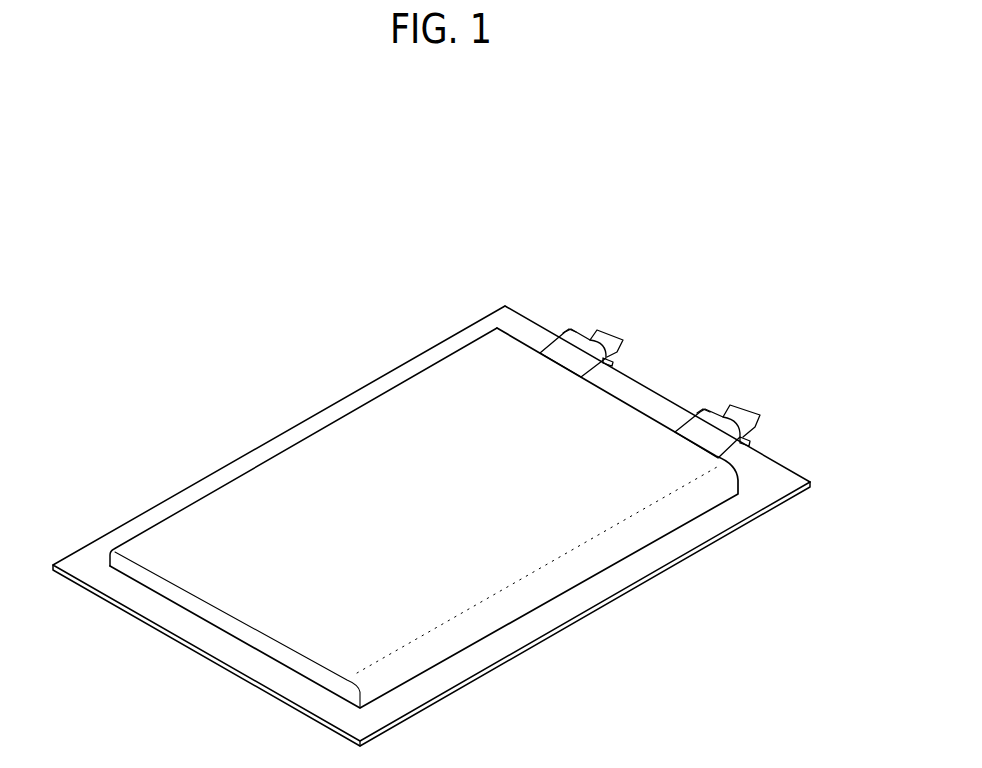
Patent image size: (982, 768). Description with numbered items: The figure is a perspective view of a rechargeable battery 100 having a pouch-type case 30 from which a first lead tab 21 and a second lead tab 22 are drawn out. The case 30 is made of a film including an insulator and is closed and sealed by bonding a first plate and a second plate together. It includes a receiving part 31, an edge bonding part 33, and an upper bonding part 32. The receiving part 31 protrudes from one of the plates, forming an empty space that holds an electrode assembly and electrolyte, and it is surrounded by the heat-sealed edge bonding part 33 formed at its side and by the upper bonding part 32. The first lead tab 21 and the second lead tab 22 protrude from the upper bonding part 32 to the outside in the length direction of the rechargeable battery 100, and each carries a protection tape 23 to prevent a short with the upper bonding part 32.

The rechargeable battery 100 is at (430, 207).
The first lead tab 21 is at (608, 334).
The second lead tab 22 is at (738, 412).
The protection tape 23 is at (592, 338).
The case 30 is at (178, 466).
The receiving part 31 is at (278, 477).
The upper bonding part 32 is at (650, 403).
The edge bonding part 33 is at (359, 391).